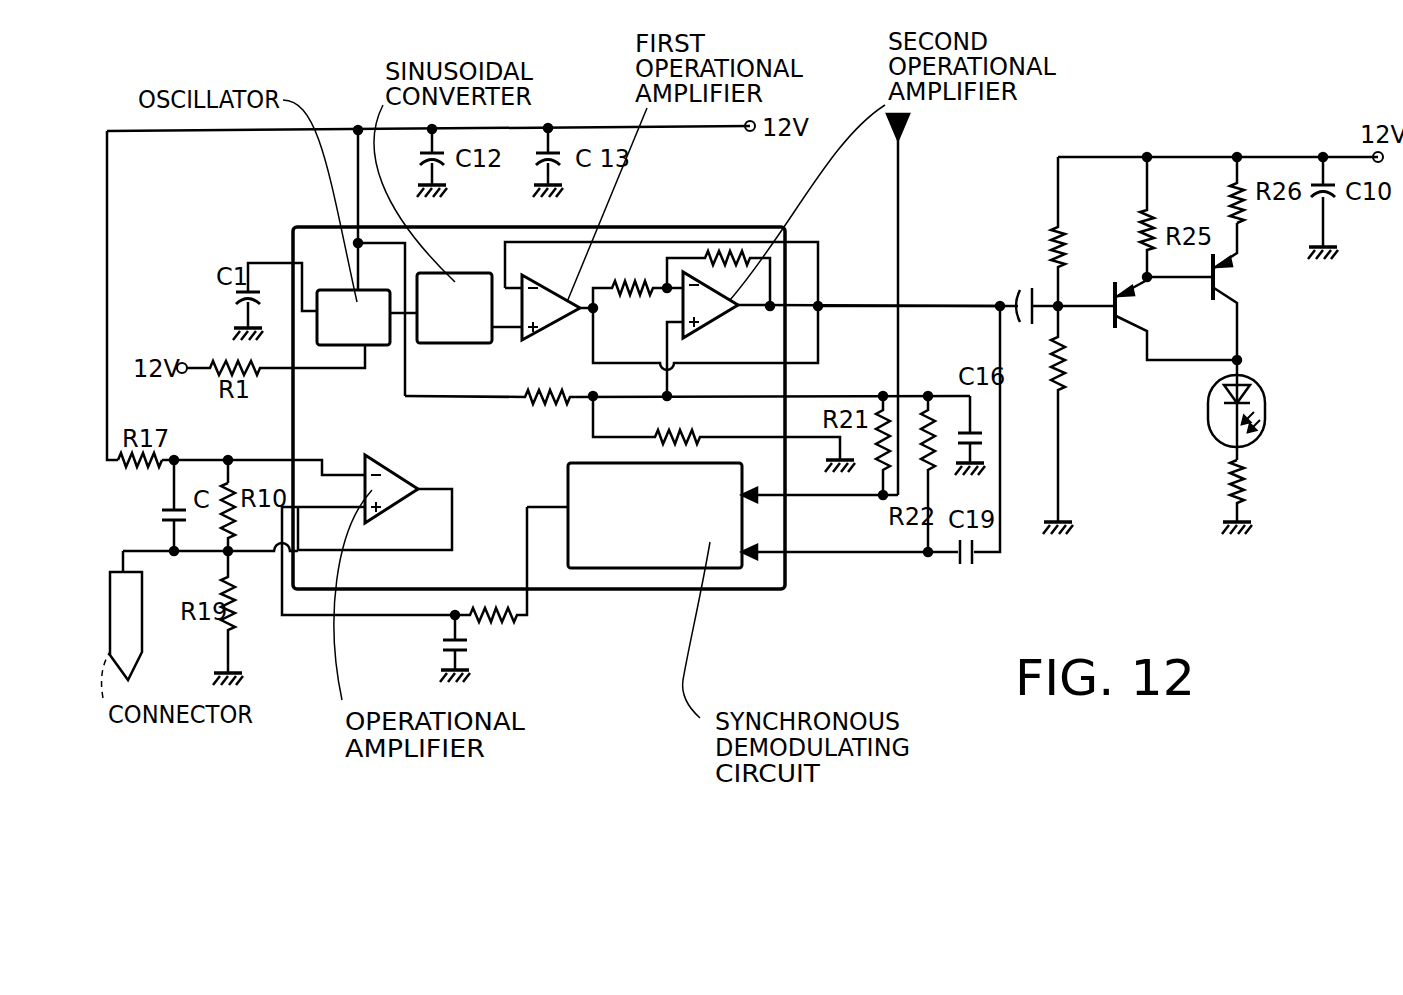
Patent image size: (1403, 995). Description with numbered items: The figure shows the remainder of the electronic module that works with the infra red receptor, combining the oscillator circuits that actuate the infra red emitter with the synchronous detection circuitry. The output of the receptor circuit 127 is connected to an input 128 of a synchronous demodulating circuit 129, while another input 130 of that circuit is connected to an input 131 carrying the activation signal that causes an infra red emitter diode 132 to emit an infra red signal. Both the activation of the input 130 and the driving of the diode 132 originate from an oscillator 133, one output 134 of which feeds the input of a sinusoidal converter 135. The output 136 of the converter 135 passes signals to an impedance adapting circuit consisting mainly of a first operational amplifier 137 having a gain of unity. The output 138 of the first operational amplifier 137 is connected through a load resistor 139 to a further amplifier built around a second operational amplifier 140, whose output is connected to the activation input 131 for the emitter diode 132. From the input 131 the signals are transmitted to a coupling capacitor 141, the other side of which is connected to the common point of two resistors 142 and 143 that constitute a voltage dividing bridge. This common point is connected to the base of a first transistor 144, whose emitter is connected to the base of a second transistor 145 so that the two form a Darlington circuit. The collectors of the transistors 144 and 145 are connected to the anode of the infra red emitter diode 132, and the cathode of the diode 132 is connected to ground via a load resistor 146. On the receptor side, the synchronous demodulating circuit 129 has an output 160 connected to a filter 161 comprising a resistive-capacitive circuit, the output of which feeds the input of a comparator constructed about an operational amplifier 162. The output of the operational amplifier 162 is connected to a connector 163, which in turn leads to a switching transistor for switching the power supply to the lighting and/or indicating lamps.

The circuit 127 is at (898, 210).
The input 128 is at (789, 497).
The synchronous demodulating circuit 129 is at (686, 557).
The input 130 is at (789, 553).
The input 131 is at (998, 293).
The infra red emitter diode 132 is at (1207, 410).
The oscillator 133 is at (338, 288).
The output 134 is at (398, 325).
The sinusoidal converter 135 is at (463, 332).
The output 136 is at (504, 332).
The first operational amplifier 137 is at (566, 297).
The output 138 is at (585, 320).
The load resistor 139 is at (636, 275).
The second operational amplifier 140 is at (718, 320).
The coupling capacitor 141 is at (1018, 294).
The resistor 142 is at (1063, 230).
The resistor 143 is at (1060, 423).
The first transistor 144 is at (1150, 322).
The second transistor 145 is at (1233, 283).
The load resistor 146 is at (1227, 487).
The output 160 is at (551, 506).
The filter 161 is at (540, 632).
The operational amplifier 162 is at (380, 515).
The connector 163 is at (138, 638).